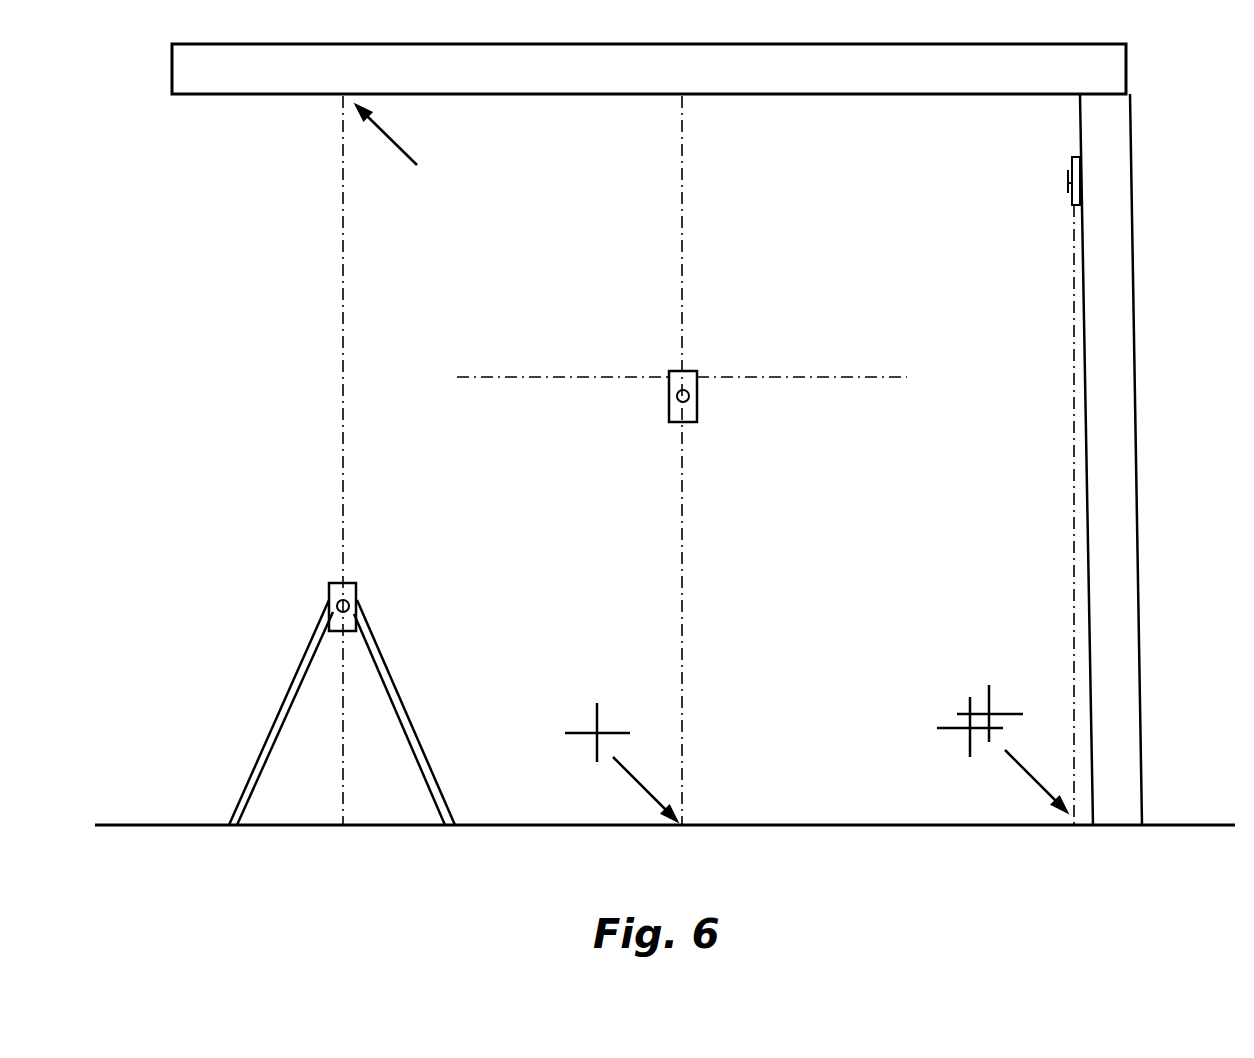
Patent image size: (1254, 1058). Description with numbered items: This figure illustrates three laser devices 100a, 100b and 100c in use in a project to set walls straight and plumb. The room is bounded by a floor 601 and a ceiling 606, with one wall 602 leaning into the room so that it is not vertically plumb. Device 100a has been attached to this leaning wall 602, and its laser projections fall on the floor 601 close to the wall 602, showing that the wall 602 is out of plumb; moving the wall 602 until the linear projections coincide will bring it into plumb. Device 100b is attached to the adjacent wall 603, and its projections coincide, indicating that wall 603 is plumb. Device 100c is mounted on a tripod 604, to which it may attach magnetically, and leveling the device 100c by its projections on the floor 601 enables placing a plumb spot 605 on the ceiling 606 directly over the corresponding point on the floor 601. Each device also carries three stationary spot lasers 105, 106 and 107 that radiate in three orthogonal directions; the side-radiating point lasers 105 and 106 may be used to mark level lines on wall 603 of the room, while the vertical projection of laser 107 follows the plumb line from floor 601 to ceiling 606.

The device 100a is at (1072, 175).
The device 100b is at (697, 372).
The device 100c is at (352, 583).
The stationary spot laser 105 is at (583, 377).
The stationary spot laser 106 is at (890, 378).
The stationary spot laser 107 is at (680, 185).
The floor 601 is at (857, 825).
The wall 602 is at (1118, 355).
The wall 603 is at (913, 149).
The tripod 604 is at (403, 700).
The plumb spot 605 is at (410, 154).
The ceiling 606 is at (620, 95).